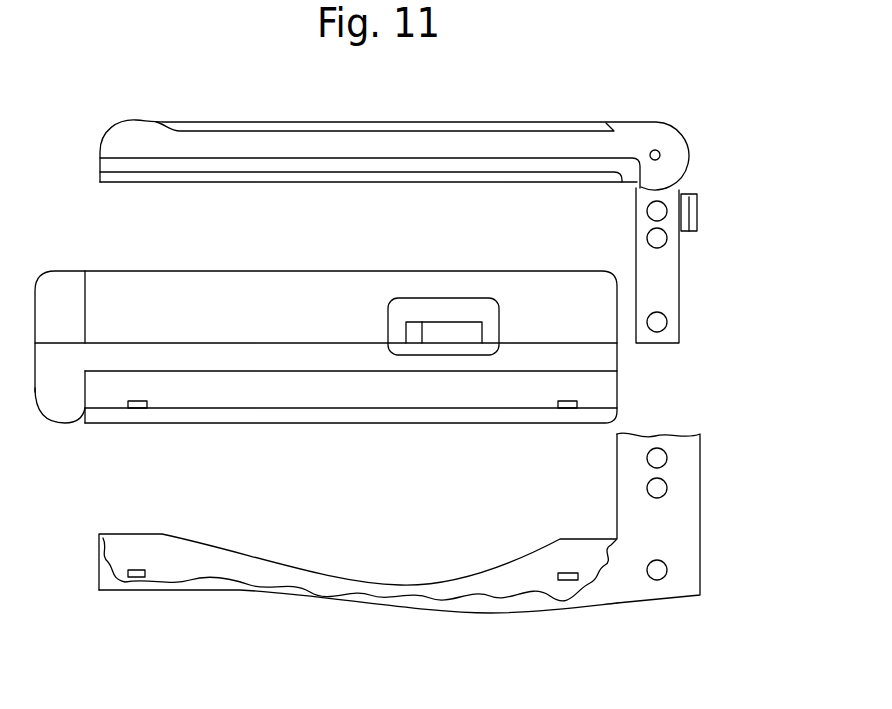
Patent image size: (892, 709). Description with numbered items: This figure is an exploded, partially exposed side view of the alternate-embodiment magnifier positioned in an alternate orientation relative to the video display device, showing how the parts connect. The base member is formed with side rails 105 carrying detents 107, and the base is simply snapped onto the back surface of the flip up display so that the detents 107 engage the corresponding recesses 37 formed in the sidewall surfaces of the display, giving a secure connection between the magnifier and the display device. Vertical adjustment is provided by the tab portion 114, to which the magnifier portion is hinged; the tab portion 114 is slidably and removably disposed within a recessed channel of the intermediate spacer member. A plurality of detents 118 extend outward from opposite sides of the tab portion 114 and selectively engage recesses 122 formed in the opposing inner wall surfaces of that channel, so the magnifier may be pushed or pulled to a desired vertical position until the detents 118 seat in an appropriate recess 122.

The recesses 37 is at (137, 408).
The side rails 105 is at (243, 566).
The detents 107 is at (136, 570).
The tab portion 114 is at (679, 276).
The detents 118 is at (667, 238).
The recesses 122 is at (667, 488).